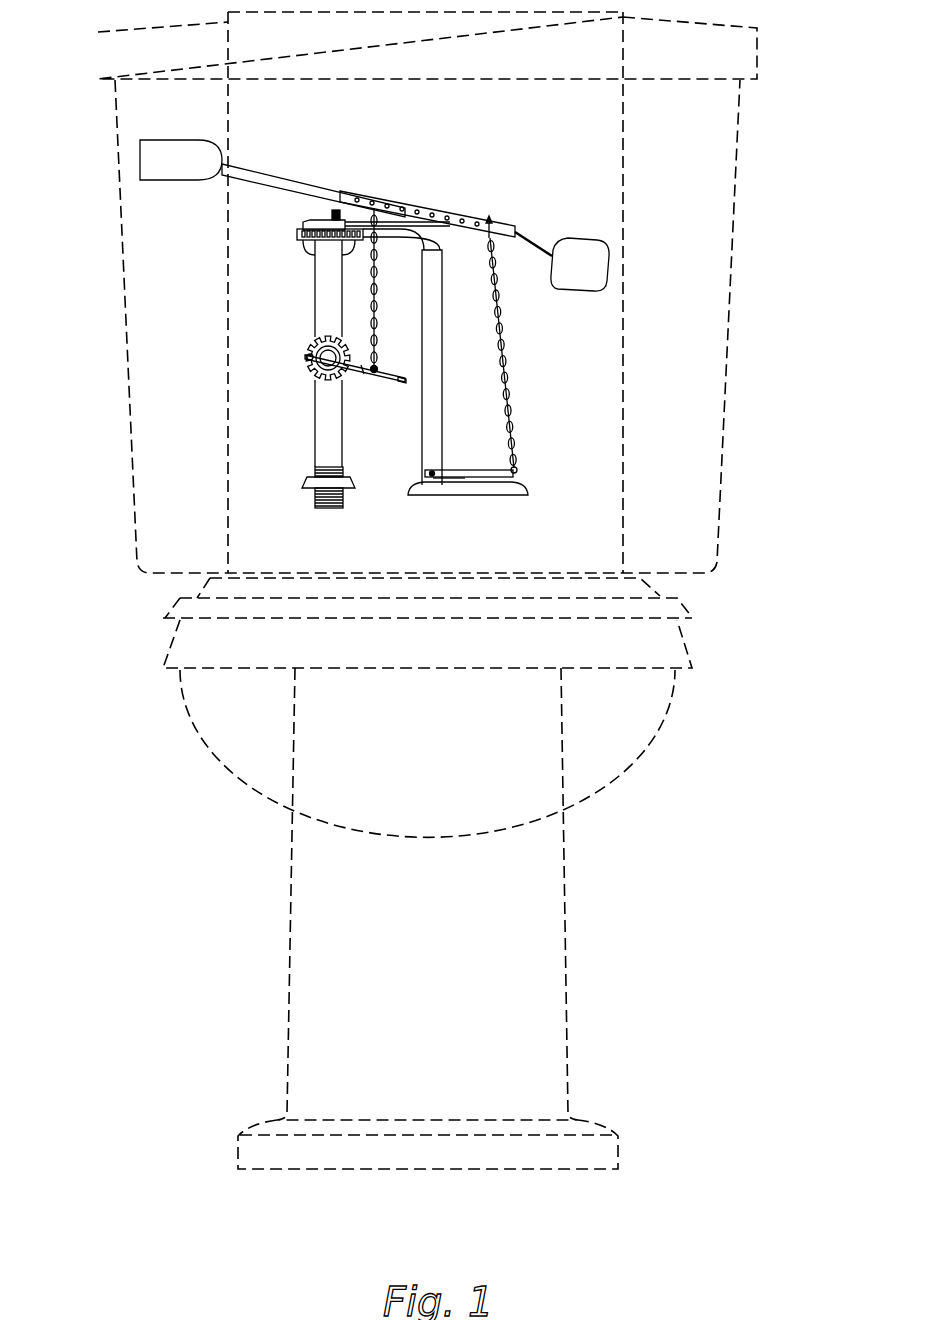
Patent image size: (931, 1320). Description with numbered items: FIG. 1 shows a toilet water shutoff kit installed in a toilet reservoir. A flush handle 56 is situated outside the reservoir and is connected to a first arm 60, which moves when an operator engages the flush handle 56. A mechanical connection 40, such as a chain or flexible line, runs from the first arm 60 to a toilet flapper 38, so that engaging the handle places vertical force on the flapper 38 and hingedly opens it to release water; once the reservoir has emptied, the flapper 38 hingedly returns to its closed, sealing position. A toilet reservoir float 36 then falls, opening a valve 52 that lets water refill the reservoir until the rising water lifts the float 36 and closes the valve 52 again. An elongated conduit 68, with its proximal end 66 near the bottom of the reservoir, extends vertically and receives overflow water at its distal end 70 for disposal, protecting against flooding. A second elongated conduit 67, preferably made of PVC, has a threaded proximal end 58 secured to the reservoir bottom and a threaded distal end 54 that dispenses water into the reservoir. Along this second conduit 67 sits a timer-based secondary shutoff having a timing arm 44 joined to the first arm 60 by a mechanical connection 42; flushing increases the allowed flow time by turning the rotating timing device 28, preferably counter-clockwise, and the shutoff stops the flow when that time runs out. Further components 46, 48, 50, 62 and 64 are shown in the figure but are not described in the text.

The rotating timing device 28 is at (313, 349).
The toilet reservoir float 36 is at (588, 252).
The toilet flapper 38 is at (518, 485).
The mechanical connection 40 is at (504, 333).
The mechanical connection 42 is at (378, 286).
The timing arm 44 is at (363, 376).
The lever arm end 46 is at (403, 384).
The pivot bolt 48 is at (308, 362).
The valve actuator block 50 is at (308, 223).
The valve 52 is at (336, 212).
The distal end 54 is at (307, 241).
The flush handle 56 is at (186, 163).
The proximal end 58 is at (315, 472).
The first arm 60 is at (453, 212).
The chain pin 62 is at (502, 228).
The float rod 64 is at (308, 182).
The proximal end 66 is at (433, 473).
The second elongated conduit 67 is at (322, 428).
The elongated conduit 68 is at (432, 397).
The distal end 70 is at (433, 267).